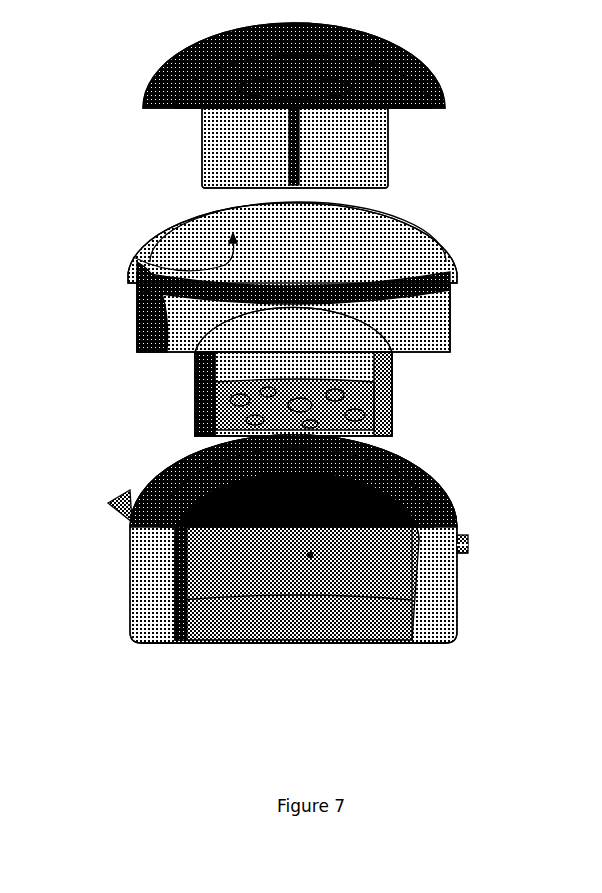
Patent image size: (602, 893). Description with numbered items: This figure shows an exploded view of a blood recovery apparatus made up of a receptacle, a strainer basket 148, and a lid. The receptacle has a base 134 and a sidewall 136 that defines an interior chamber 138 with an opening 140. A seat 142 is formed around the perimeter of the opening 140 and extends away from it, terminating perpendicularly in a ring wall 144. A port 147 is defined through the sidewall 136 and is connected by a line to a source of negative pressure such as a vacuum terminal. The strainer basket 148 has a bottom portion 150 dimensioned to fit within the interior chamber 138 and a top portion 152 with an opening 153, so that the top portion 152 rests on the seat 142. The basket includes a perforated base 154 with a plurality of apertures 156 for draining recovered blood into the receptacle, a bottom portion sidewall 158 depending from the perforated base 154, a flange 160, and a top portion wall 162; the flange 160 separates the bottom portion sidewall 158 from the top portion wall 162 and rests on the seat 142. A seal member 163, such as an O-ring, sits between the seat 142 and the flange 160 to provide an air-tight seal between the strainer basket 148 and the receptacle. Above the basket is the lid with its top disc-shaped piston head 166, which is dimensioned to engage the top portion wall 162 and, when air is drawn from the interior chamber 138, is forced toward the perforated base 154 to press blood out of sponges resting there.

The base 134 is at (267, 645).
The sidewall 136 is at (243, 567).
The interior chamber 138 is at (310, 555).
The opening 140 is at (319, 575).
The seat 142 is at (462, 530).
The ring wall 144 is at (458, 505).
The port 147 is at (467, 553).
The strainer basket 148 is at (315, 326).
The bottom portion 150 is at (297, 401).
The top portion 152 is at (452, 305).
The opening 153 is at (137, 258).
The perforated base 154 is at (227, 420).
The apertures 156 is at (400, 440).
The bottom portion sidewall 158 is at (207, 380).
The flange 160 is at (452, 325).
The top portion wall 162 is at (140, 332).
The seal member 163 is at (450, 473).
The disc-shaped piston head 166 is at (445, 95).